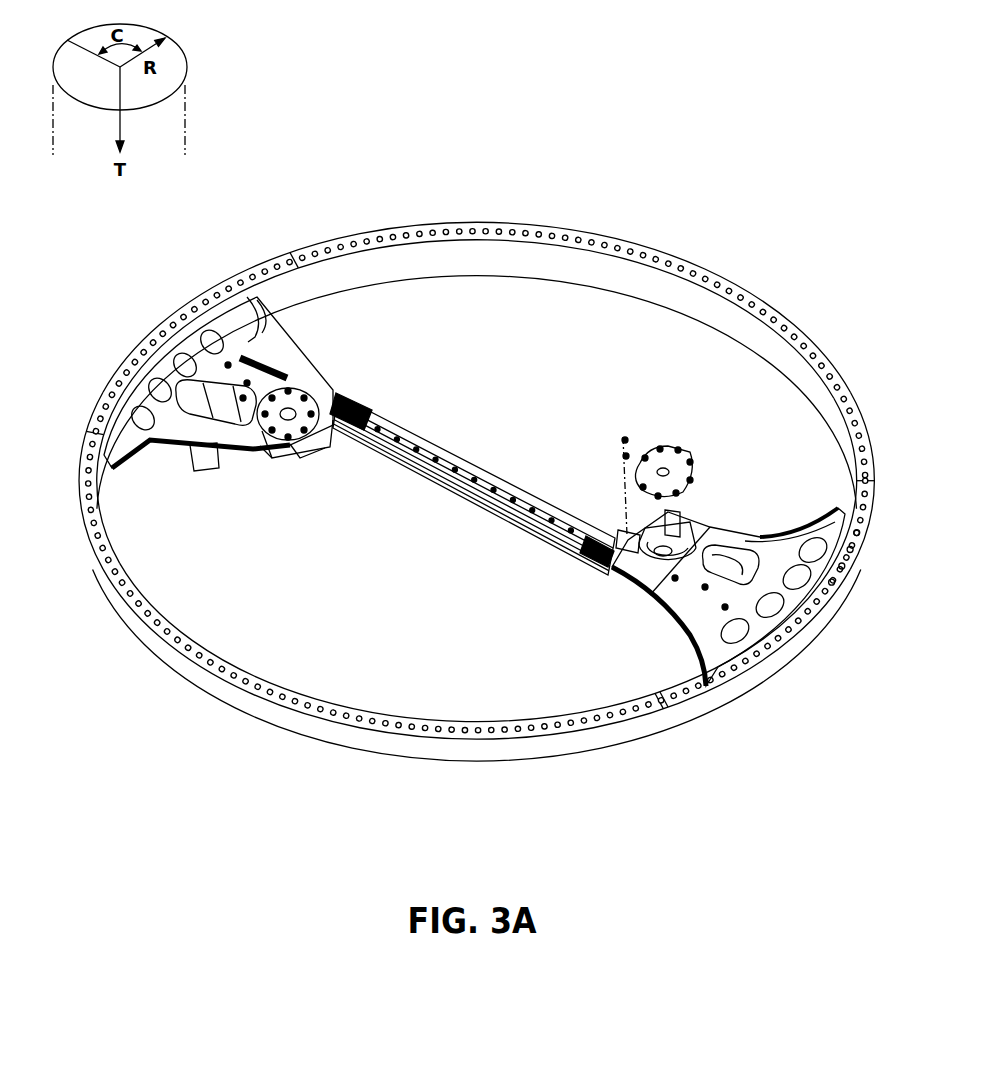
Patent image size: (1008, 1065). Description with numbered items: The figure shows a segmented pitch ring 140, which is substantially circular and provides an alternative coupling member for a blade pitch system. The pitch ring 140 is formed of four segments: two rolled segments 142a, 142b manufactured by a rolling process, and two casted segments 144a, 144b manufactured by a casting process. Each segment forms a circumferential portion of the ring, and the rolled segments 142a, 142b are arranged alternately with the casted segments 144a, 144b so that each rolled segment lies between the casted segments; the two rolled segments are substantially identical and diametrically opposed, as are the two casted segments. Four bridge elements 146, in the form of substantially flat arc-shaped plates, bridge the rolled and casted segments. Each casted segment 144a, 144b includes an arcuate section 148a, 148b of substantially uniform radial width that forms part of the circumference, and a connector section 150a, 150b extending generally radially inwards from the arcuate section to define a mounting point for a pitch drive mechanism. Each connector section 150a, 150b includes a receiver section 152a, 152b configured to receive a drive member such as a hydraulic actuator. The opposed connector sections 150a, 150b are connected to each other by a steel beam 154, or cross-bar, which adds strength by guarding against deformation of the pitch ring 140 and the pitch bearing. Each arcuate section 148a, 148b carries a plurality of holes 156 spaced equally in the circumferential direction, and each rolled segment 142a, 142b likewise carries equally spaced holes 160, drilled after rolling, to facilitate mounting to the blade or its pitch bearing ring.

The segmented pitch ring 140 is at (797, 183).
The rolled segment 142a is at (340, 735).
The rolled segment 142b is at (628, 238).
The casted segment 144a is at (100, 402).
The casted segment 144b is at (768, 675).
The bridge element 146 is at (697, 688).
The arcuate section 148a is at (133, 363).
The arcuate section 148b is at (807, 618).
The connector section 150a is at (237, 320).
The connector section 150b is at (750, 540).
The receiver section 152a is at (280, 425).
The receiver section 152b is at (687, 517).
The beam 154 is at (467, 500).
The holes 156 is at (833, 565).
The holes 160 is at (453, 230).